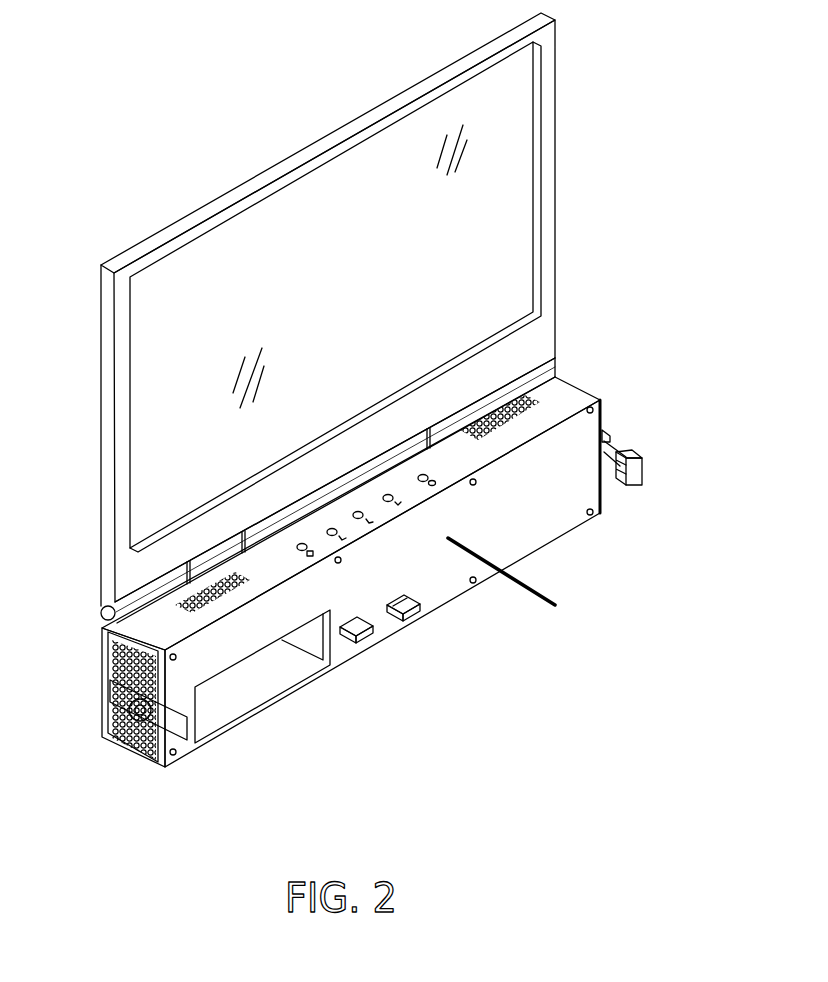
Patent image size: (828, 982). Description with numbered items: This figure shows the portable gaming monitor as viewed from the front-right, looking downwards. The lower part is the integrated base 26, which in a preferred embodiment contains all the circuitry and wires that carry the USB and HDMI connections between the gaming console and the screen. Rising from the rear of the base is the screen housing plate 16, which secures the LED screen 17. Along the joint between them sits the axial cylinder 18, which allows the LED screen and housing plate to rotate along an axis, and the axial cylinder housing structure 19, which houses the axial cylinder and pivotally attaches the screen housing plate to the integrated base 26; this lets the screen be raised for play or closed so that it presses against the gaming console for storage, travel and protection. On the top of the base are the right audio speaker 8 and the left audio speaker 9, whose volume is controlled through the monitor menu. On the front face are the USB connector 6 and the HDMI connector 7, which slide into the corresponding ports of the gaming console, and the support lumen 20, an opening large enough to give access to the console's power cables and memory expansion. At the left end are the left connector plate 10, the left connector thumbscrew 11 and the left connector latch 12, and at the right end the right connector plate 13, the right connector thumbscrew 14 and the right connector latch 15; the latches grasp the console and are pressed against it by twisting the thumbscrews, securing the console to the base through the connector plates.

The USB Connector 6 is at (413, 595).
The HDMI Connector 7 is at (367, 623).
The Right Audio Speaker 8 is at (495, 410).
The Left Audio Speaker 9 is at (172, 573).
The Left Connector Plate 10 is at (145, 755).
The Left Connector Thumbscrew 11 is at (110, 708).
The Left Connector Latch 12 is at (182, 728).
The Right Connector Plate 13 is at (622, 447).
The Right Connector Thumbscrew 14 is at (606, 432).
The Right Connector Latch 15 is at (642, 472).
The Screen Housing Plate 16 is at (327, 140).
The LED Screen 17 is at (488, 160).
The Axial Cylinder 18 is at (215, 553).
The Axial Cylinder Housing Structure 19 is at (370, 462).
The Support Lumen 20 is at (352, 680).
The Integrated Base 26 is at (520, 584).